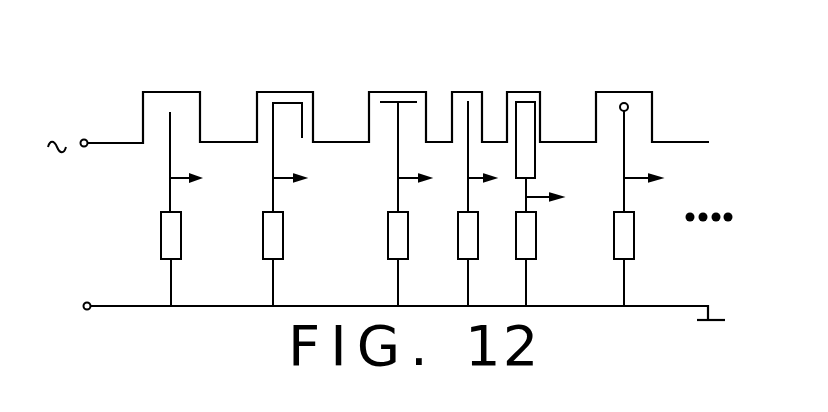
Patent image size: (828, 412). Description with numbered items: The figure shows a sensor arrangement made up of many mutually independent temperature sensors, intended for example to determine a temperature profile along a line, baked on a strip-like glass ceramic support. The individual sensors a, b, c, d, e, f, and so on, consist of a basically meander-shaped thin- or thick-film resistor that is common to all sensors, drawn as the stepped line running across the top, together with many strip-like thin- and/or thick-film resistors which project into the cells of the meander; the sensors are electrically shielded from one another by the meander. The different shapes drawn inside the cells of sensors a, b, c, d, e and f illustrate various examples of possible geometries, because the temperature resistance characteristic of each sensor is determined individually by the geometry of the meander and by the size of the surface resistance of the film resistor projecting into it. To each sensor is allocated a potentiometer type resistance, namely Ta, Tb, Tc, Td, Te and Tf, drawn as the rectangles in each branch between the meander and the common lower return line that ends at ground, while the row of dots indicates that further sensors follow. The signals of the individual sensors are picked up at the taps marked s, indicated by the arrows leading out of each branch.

The individual sensor a is at (171, 139).
The individual sensor b is at (287, 139).
The individual sensor c is at (398, 139).
The individual sensor d is at (465, 139).
The individual sensor e is at (524, 139).
The individual sensor f is at (623, 139).
The signal pick-up s is at (423, 188).
The potentiometer type resistance Ta is at (187, 259).
The potentiometer type resistance Tb is at (288, 259).
The potentiometer type resistance Tc is at (412, 259).
The potentiometer type resistance Td is at (483, 259).
The potentiometer type resistance Te is at (541, 259).
The potentiometer type resistance Tf is at (637, 259).